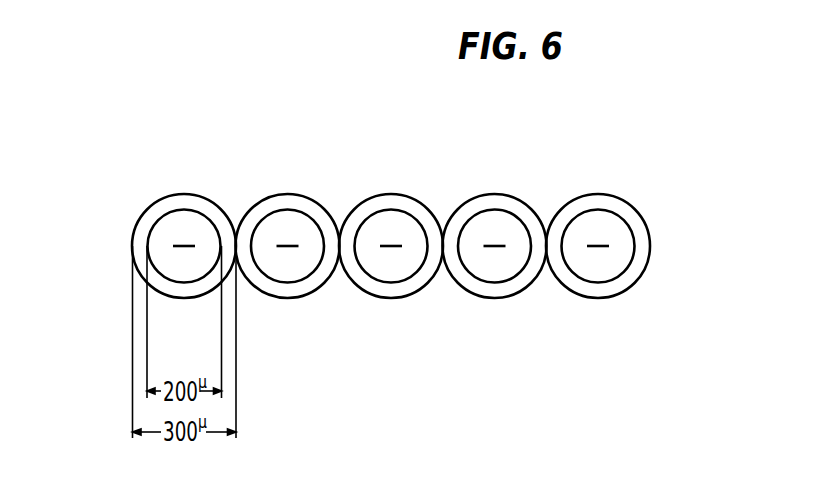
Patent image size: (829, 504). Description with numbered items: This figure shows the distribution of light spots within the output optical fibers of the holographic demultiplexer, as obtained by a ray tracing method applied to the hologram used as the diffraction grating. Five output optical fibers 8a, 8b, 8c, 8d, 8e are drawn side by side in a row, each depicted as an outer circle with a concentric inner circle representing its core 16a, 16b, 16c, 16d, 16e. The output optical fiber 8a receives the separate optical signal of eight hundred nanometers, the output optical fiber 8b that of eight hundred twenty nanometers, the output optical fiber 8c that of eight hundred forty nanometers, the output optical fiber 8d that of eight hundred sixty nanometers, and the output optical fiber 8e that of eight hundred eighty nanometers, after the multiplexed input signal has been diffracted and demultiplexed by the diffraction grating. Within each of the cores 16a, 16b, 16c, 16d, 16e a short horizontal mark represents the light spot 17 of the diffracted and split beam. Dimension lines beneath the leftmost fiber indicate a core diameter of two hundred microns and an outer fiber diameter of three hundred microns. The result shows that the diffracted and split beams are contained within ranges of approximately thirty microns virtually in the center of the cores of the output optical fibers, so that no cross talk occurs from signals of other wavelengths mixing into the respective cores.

The output optical fiber 8a is at (598, 201).
The output optical fiber 8b is at (495, 201).
The output optical fiber 8c is at (391, 201).
The output optical fiber 8d is at (288, 201).
The output optical fiber 8e is at (184, 201).
The core 16a is at (618, 277).
The core 16b is at (515, 277).
The core 16c is at (413, 277).
The core 16d is at (309, 277).
The core 16e is at (206, 276).
The light spot 17 is at (394, 243).